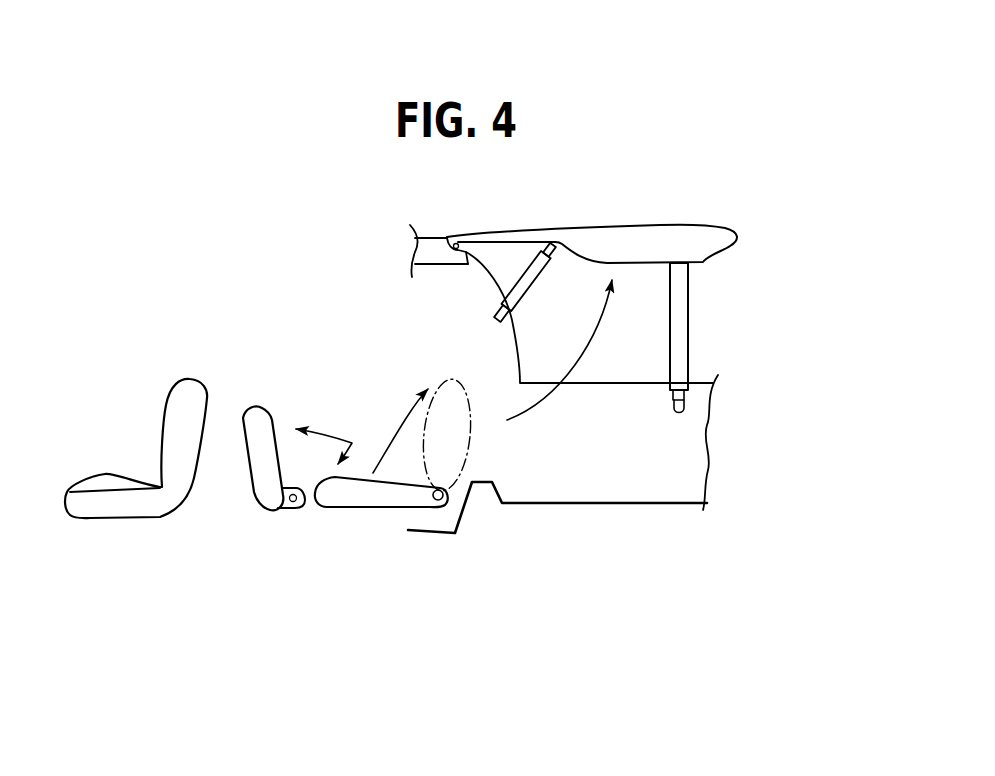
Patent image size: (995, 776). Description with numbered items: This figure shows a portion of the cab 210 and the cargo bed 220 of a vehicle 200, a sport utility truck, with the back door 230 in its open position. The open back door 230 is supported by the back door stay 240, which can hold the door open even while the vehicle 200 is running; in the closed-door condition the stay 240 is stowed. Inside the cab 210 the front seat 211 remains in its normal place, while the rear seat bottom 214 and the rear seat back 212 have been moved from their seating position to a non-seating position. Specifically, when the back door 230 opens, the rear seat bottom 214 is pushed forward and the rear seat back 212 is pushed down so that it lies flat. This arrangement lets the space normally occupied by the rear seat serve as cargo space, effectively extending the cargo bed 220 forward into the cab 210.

The vehicle 200 is at (669, 540).
The cab 210 is at (315, 261).
The front seat 211 is at (117, 522).
The rear seat back 212 is at (345, 510).
The rear seat bottom 214 is at (247, 487).
The cargo bed 220 is at (675, 477).
The back door 230 is at (662, 222).
The back door stay 240 is at (696, 352).